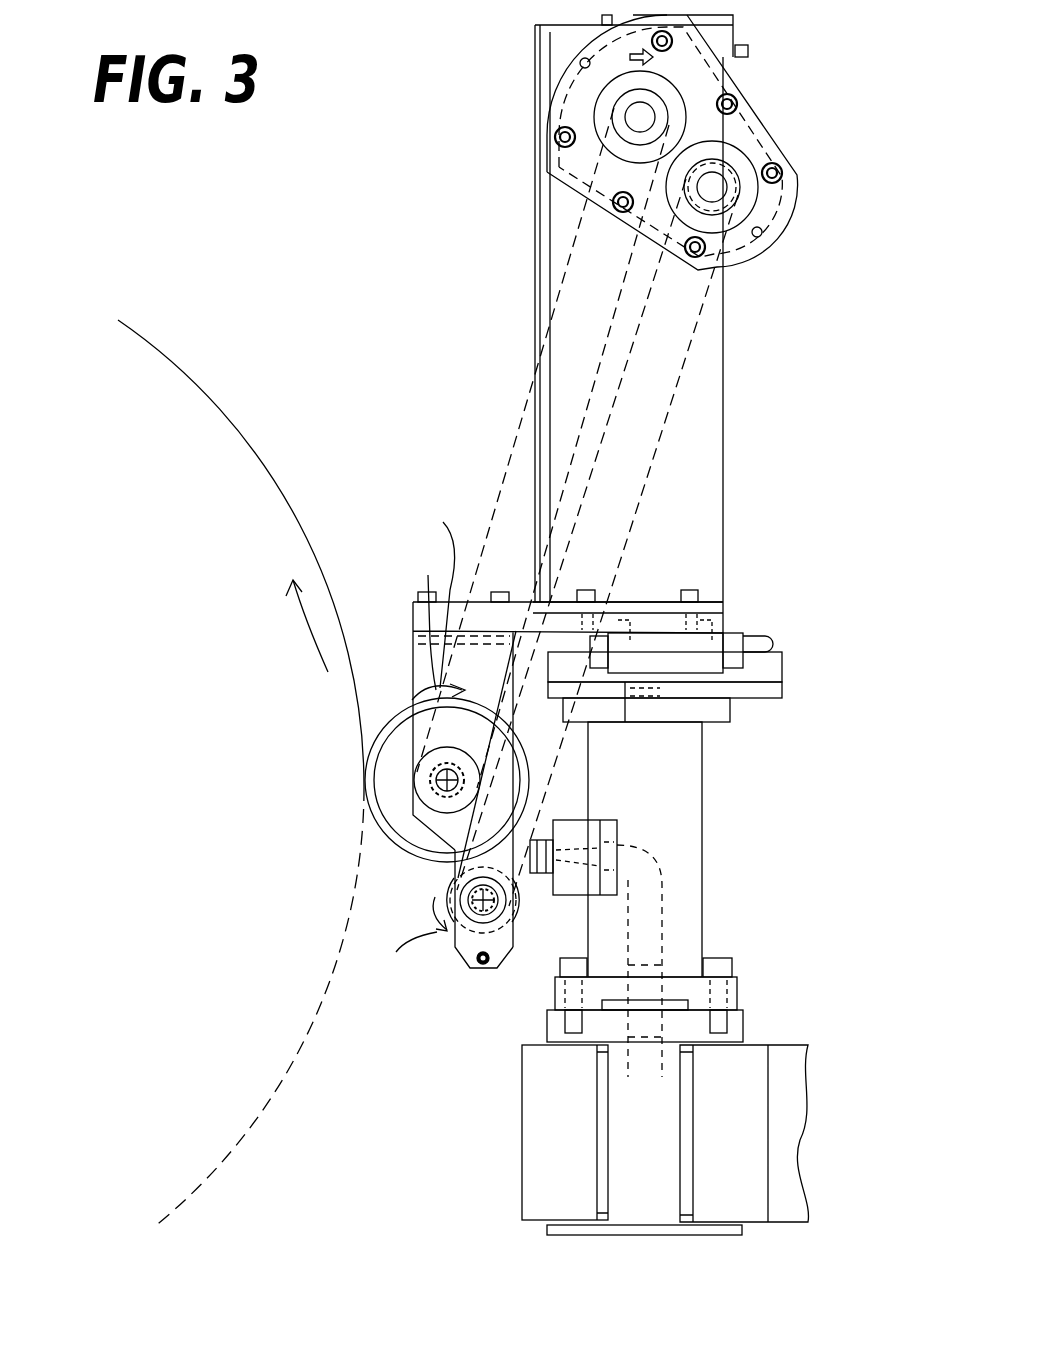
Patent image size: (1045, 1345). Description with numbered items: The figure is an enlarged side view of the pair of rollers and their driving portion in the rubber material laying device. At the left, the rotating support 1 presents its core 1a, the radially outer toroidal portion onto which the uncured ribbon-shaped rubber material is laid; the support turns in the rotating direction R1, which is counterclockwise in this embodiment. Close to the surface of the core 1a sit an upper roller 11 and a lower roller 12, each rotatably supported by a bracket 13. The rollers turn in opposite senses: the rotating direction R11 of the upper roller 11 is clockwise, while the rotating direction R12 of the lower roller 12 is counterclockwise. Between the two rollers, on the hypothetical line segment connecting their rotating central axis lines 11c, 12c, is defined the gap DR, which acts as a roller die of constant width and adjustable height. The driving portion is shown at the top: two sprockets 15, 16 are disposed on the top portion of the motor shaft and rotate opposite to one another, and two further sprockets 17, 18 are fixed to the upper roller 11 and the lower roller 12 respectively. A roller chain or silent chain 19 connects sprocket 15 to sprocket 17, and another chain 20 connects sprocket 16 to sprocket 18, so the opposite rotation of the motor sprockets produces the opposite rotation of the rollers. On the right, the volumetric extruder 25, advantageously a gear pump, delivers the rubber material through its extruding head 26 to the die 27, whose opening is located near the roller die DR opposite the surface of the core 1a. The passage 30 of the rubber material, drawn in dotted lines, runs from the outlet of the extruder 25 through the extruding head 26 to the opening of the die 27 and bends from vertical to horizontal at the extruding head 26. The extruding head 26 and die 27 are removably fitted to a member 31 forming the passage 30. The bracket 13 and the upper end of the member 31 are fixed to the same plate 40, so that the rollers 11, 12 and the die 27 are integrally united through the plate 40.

The rotating support 1 is at (210, 369).
The core 1a is at (245, 445).
The upper roller 11 is at (378, 727).
The rotating central axis line 11c is at (423, 790).
The lower roller 12 is at (455, 930).
The rotating central axis line 12c is at (453, 888).
The bracket 13 is at (423, 660).
The sprocket 15 is at (625, 112).
The sprocket 16 is at (752, 198).
The sprocket 17 is at (470, 753).
The sprocket 18 is at (498, 955).
The roller chain or silent chain 19 is at (565, 476).
The roller chain or silent chain 20 is at (640, 500).
The volumetric extruder 25 is at (538, 1160).
The extruding head 26 is at (566, 878).
The die 27 is at (540, 840).
The passage 30 is at (655, 900).
The member 31 is at (668, 806).
The plate 40 is at (441, 591).
The rotating direction R1 is at (305, 626).
The rotating direction R11 is at (431, 621).
The rotating direction R12 is at (404, 943).
The gap DR is at (455, 867).